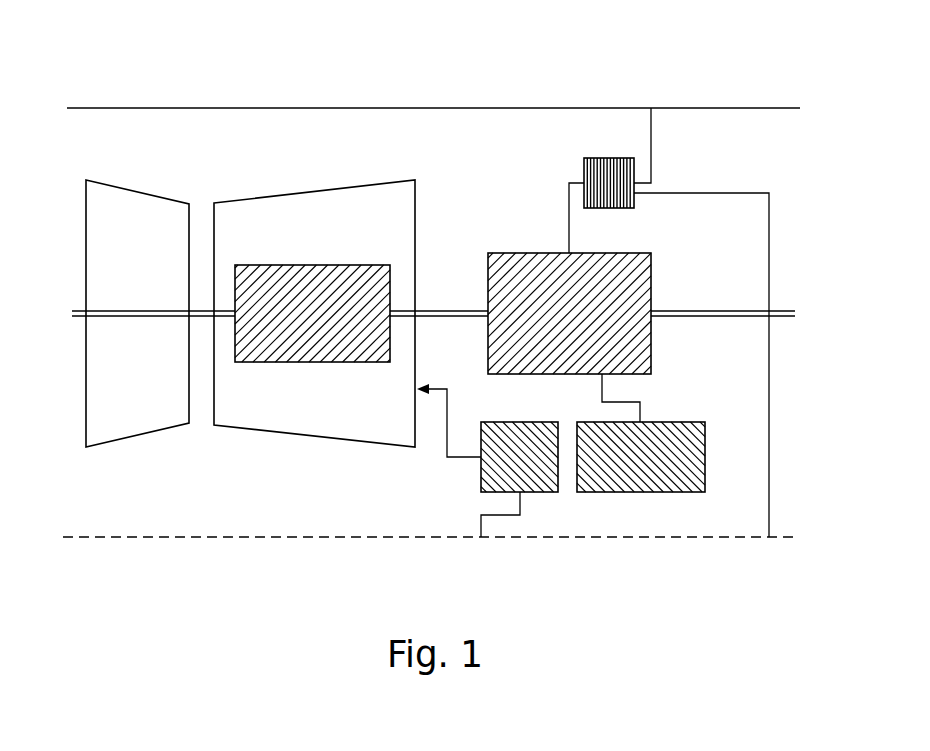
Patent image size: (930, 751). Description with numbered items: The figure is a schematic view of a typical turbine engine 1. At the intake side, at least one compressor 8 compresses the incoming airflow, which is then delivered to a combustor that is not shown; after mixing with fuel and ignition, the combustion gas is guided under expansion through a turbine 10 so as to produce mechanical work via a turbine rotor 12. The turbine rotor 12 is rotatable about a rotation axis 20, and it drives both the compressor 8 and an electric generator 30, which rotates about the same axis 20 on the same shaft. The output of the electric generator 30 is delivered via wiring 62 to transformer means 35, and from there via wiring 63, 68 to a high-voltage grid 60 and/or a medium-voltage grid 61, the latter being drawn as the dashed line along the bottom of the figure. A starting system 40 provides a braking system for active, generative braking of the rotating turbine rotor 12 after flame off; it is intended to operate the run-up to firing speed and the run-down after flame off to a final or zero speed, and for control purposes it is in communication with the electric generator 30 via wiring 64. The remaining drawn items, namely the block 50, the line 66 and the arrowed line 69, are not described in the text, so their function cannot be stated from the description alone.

The turbine engine 1 is at (121, 491).
The compressor 8 is at (143, 212).
The turbine 10 is at (242, 410).
The turbine rotor 12 is at (316, 343).
The rotation axis 20 is at (402, 313).
The electric generator 30 is at (503, 268).
The transformer means 35 is at (593, 160).
The starting system 40 is at (687, 480).
The control unit 50 is at (500, 493).
The high-voltage grid 60 is at (324, 108).
The medium-voltage grid 61 is at (138, 538).
The wiring 62 is at (568, 192).
The wiring 63 is at (653, 118).
The wiring 64 is at (622, 403).
The connection line 66 is at (521, 504).
The wiring 68 is at (772, 500).
The control signal line 69 is at (453, 458).